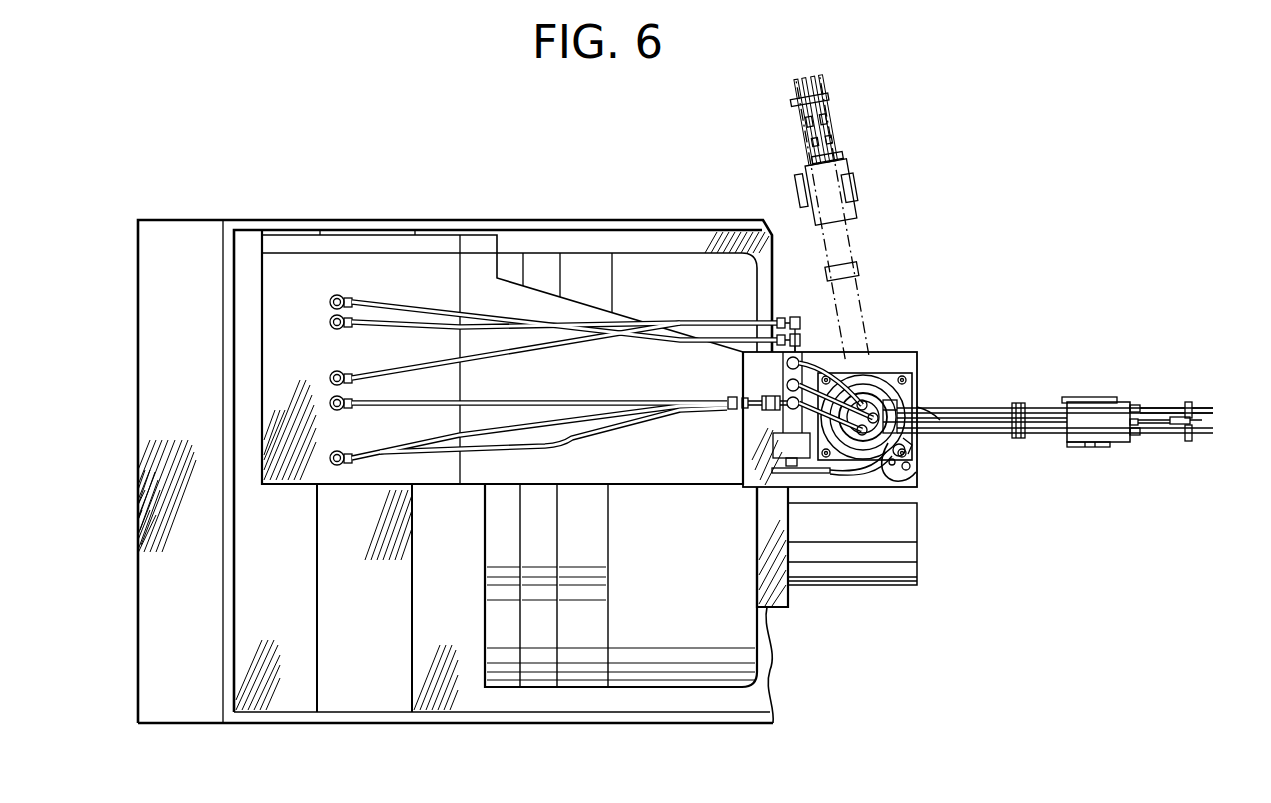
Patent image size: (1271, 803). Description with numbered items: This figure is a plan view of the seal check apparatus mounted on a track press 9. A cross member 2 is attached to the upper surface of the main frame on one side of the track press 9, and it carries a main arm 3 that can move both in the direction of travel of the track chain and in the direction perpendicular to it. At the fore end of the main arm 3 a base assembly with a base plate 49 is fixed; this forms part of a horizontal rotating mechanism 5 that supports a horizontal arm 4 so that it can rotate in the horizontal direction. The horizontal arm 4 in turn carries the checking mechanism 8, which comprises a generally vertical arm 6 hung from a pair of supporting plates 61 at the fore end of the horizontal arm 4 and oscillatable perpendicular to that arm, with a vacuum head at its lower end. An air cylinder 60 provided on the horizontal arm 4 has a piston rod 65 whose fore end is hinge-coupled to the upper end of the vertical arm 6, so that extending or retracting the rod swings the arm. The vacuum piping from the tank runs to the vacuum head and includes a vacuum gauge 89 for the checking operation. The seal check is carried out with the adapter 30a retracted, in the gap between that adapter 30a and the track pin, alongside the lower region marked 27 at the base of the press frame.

The track press 9 is at (135, 620).
The base plate 27 is at (181, 712).
The cross member 2 is at (360, 700).
The main arm 3 is at (662, 485).
The base plate 49 is at (905, 356).
The vacuum gauge 89 is at (773, 445).
The horizontal rotating mechanism 5 is at (898, 489).
The adapter 30a is at (888, 568).
The air cylinder 60 is at (966, 410).
The piston rod 65 is at (1047, 423).
The horizontal arm 4 is at (1046, 403).
The checking mechanism 8 is at (1097, 397).
The hanging supporting plates 61 is at (1155, 407).
The vertical arm 6 is at (1198, 404).